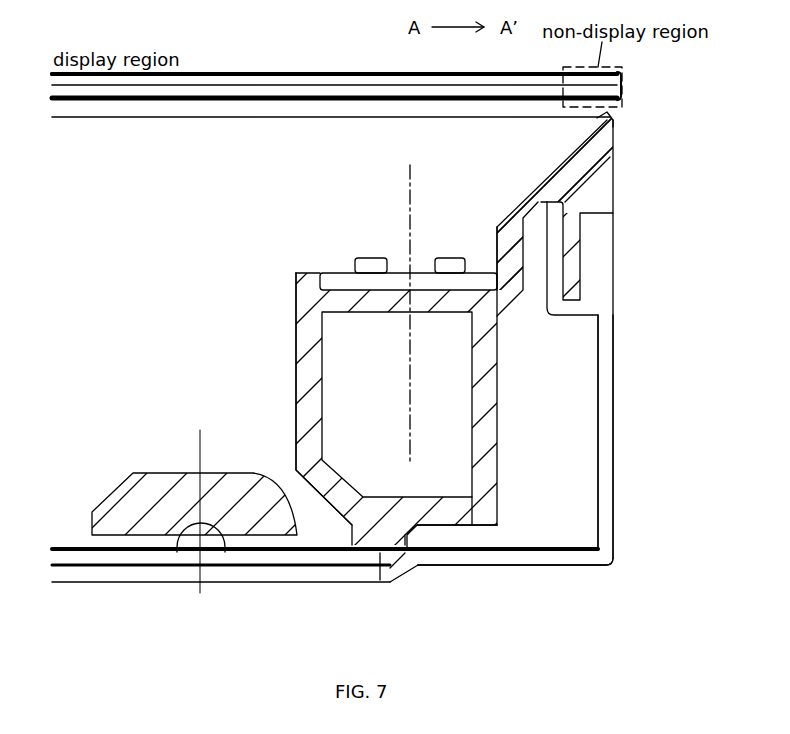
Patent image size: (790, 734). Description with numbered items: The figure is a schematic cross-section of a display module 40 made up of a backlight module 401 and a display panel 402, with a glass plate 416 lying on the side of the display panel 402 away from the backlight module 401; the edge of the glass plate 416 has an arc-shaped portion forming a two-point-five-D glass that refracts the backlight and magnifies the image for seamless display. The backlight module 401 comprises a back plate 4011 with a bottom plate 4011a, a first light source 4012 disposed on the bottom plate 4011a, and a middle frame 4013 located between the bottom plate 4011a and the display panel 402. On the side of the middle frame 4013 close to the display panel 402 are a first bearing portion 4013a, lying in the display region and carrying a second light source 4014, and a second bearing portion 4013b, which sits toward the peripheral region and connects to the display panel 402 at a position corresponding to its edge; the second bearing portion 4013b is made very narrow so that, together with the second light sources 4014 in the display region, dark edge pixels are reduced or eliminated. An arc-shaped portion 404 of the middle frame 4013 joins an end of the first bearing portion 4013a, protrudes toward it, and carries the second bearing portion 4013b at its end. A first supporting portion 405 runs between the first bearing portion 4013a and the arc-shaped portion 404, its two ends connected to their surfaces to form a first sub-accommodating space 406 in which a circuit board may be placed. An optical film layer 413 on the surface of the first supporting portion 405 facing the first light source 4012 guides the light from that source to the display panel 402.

The display module 40 is at (352, 628).
The backlight module 401 is at (615, 178).
The display panel 402 is at (200, 92).
The arc-shaped portion 404 is at (498, 228).
The first supporting portion 405 is at (310, 405).
The first sub-accommodating space 406 is at (338, 358).
The optical film layer 413 is at (297, 433).
The glass plate 416 is at (355, 77).
The back plate 4011 is at (617, 440).
The bottom plate 4011a is at (510, 557).
The first light source 4012 is at (163, 530).
The middle frame 4013 is at (488, 387).
The first bearing portion 4013a is at (325, 285).
The second bearing portion 4013b is at (600, 125).
The second light source 4014 is at (370, 258).